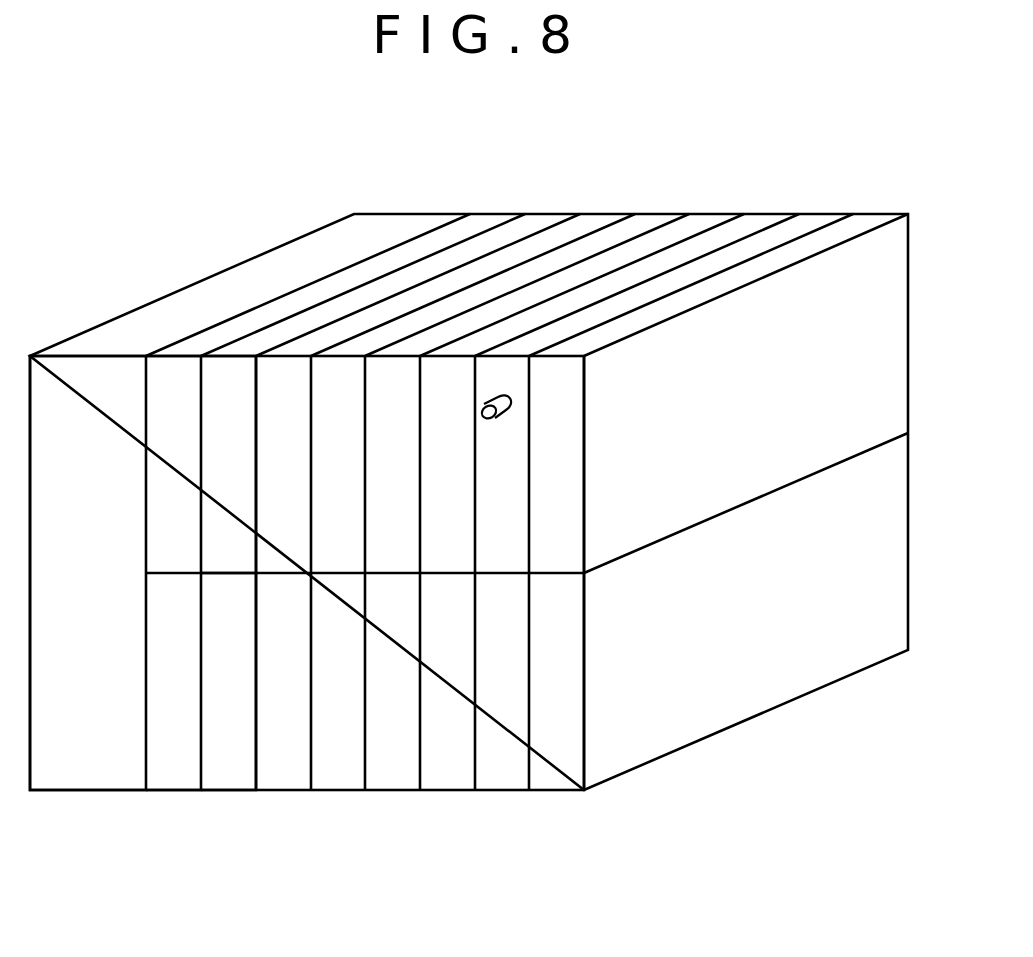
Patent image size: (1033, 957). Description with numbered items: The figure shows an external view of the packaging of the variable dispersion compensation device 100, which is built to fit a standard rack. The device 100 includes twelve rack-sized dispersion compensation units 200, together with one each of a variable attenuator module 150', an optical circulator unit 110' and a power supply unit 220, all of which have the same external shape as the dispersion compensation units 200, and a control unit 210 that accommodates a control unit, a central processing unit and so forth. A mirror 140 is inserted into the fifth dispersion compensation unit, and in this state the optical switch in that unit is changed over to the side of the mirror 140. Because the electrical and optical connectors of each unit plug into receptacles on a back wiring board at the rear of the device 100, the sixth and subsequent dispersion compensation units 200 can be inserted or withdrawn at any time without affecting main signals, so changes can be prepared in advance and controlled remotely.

The variable dispersion compensation device 100 is at (735, 168).
The optical circulator unit 110' is at (232, 718).
The mirror 140 is at (506, 403).
The variable attenuator module 150' is at (196, 390).
The dispersion compensation units 200 is at (256, 798).
The control unit 210 is at (90, 763).
The power supply unit 220 is at (168, 770).